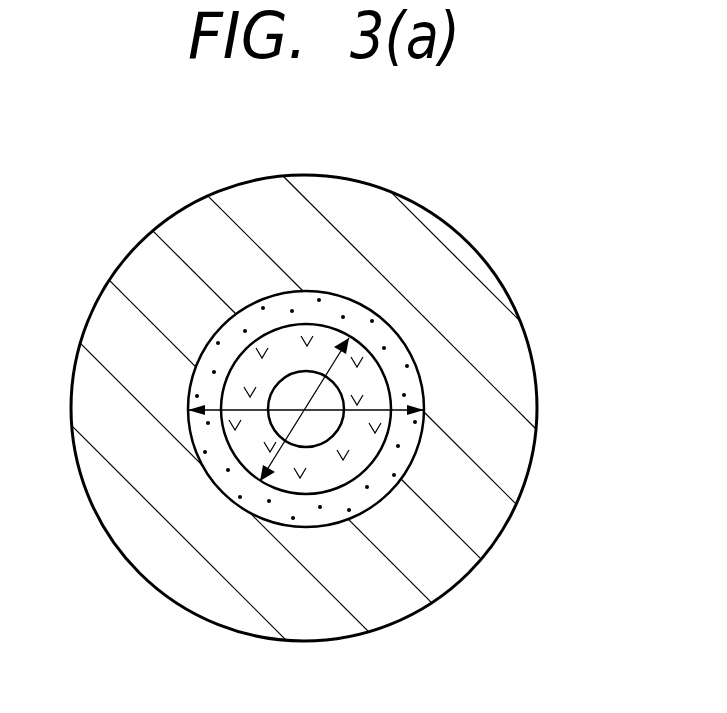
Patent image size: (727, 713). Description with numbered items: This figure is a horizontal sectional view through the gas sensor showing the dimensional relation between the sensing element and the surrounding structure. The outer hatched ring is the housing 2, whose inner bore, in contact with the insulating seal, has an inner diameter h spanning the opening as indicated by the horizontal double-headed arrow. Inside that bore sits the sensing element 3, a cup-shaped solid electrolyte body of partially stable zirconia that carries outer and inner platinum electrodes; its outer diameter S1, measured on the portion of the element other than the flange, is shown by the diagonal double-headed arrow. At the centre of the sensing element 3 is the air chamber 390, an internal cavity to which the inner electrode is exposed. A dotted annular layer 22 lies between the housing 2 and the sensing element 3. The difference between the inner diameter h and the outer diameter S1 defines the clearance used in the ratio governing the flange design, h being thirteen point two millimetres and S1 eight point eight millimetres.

The housing 2 is at (457, 300).
The insulating layer 22 is at (372, 330).
The sensing element 3 is at (357, 443).
The air chamber 390 is at (325, 398).
The inner diameter h is at (424, 411).
The outer diameter S1 is at (304, 446).